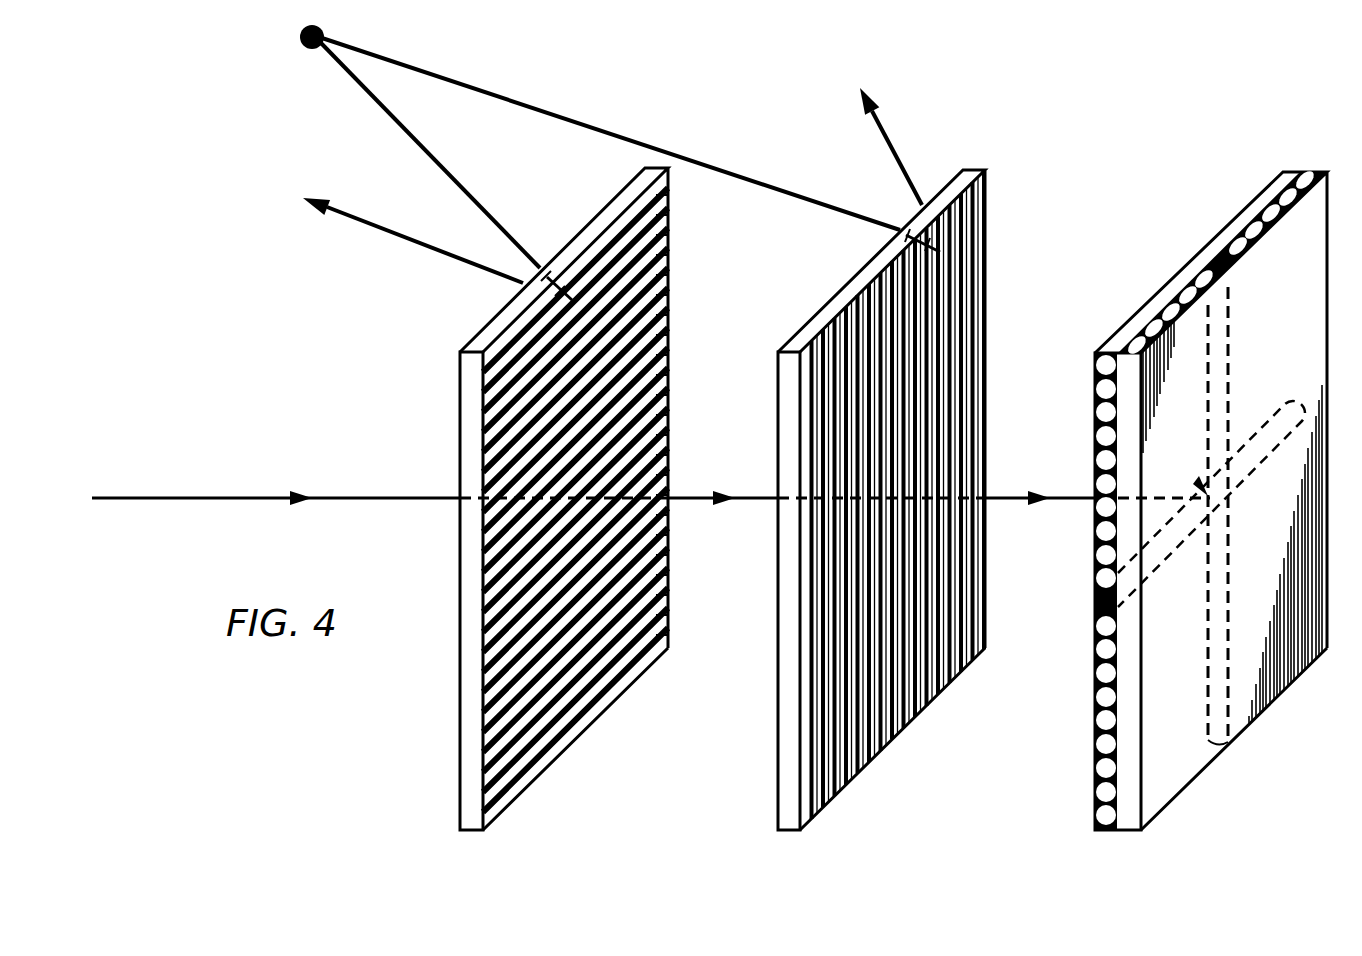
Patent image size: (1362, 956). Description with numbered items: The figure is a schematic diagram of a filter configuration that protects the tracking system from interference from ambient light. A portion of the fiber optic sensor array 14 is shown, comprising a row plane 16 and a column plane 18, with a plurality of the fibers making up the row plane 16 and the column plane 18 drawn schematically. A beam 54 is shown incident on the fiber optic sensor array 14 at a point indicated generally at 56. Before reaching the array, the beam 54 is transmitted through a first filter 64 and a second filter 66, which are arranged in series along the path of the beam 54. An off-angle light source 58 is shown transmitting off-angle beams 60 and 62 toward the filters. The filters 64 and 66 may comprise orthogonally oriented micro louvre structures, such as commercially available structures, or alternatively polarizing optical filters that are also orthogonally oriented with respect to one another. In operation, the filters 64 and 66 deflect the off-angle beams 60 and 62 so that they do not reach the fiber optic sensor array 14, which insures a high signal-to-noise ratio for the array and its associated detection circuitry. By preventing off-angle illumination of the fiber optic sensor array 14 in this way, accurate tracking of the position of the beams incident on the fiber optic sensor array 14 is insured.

The fiber optic sensor array 14 is at (1178, 797).
The row plane 16 is at (1106, 827).
The column plane 18 is at (1318, 171).
The beam 54 is at (1010, 496).
The point of incidence 56 is at (1196, 480).
The off-angle light source 58 is at (301, 45).
The off-angle beam 60 is at (540, 112).
The off-angle beam 62 is at (380, 108).
The first filter 64 is at (472, 827).
The second filter 66 is at (788, 825).